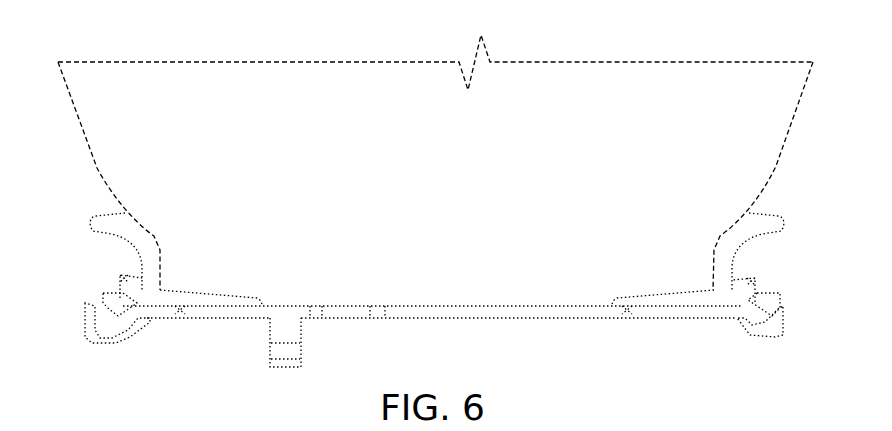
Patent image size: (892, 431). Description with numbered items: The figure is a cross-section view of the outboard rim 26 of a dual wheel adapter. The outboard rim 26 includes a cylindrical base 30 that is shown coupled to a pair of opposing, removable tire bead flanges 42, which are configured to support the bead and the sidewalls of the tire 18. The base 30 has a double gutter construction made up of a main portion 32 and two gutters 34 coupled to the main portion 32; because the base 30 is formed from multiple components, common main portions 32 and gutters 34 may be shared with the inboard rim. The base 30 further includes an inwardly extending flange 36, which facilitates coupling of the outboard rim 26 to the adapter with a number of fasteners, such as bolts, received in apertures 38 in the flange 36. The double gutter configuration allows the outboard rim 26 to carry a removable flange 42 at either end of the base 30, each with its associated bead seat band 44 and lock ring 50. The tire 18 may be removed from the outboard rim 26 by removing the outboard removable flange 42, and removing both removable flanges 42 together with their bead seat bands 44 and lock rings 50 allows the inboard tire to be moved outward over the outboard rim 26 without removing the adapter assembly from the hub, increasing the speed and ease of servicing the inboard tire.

The tire 18 is at (192, 74).
The outboard rim 26 is at (604, 352).
The cylindrical base 30 is at (538, 329).
The main portion 32 is at (463, 313).
The gutter 34 is at (97, 325).
The inwardly extending flange 36 is at (290, 365).
The aperture 38 is at (298, 350).
The removable tire bead flange 42 is at (105, 215).
The bead seat band 44 is at (123, 276).
The lock ring 50 is at (105, 297).